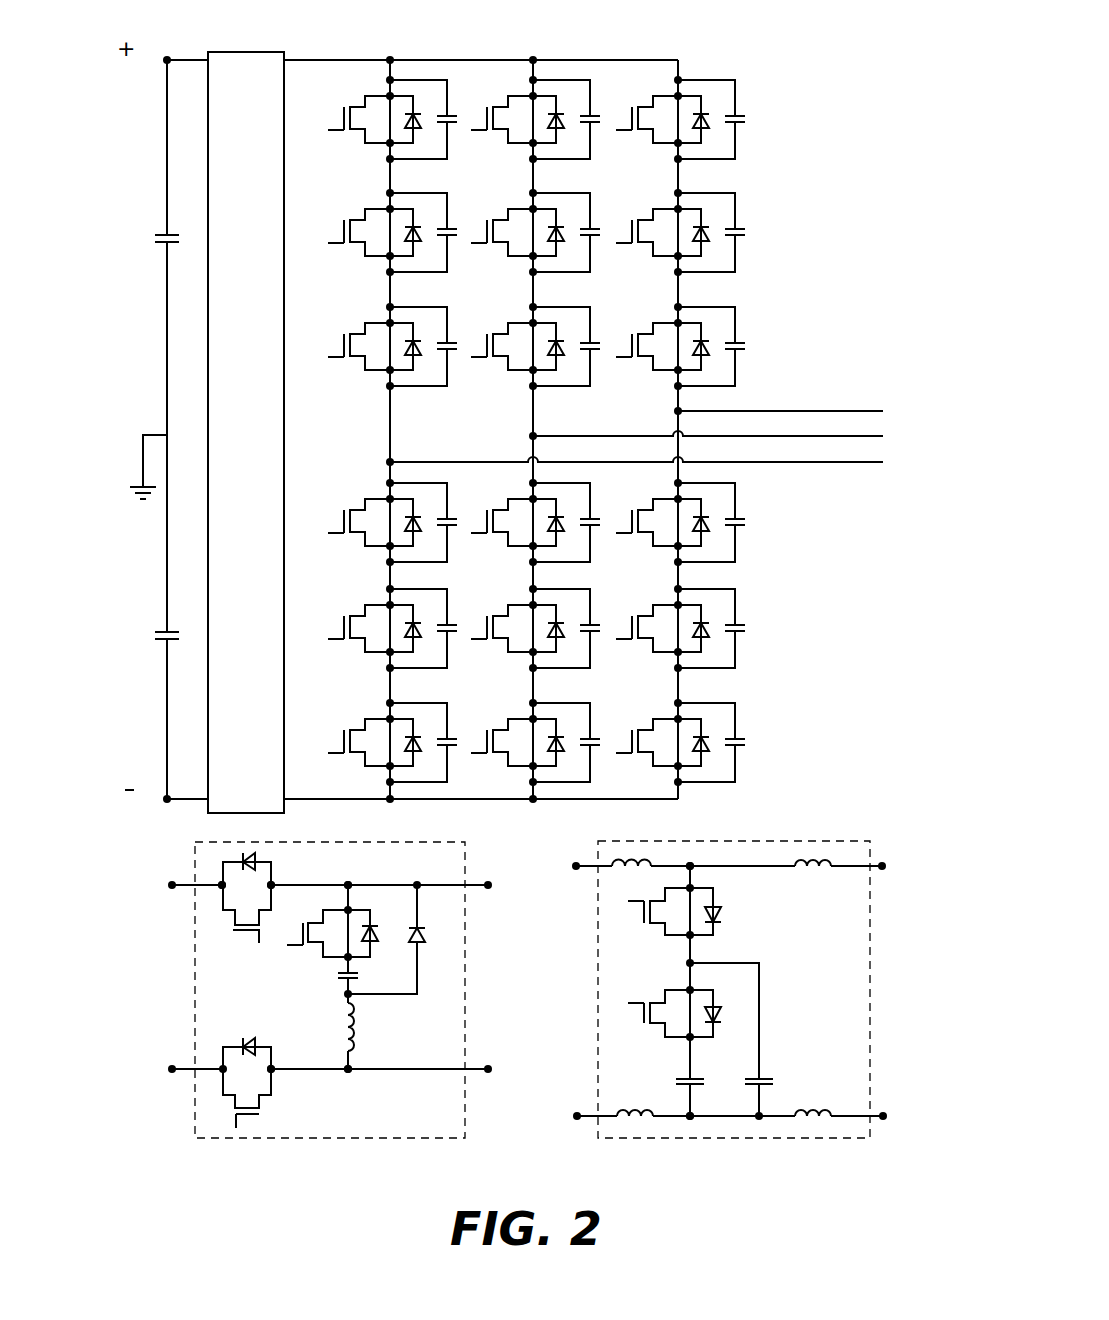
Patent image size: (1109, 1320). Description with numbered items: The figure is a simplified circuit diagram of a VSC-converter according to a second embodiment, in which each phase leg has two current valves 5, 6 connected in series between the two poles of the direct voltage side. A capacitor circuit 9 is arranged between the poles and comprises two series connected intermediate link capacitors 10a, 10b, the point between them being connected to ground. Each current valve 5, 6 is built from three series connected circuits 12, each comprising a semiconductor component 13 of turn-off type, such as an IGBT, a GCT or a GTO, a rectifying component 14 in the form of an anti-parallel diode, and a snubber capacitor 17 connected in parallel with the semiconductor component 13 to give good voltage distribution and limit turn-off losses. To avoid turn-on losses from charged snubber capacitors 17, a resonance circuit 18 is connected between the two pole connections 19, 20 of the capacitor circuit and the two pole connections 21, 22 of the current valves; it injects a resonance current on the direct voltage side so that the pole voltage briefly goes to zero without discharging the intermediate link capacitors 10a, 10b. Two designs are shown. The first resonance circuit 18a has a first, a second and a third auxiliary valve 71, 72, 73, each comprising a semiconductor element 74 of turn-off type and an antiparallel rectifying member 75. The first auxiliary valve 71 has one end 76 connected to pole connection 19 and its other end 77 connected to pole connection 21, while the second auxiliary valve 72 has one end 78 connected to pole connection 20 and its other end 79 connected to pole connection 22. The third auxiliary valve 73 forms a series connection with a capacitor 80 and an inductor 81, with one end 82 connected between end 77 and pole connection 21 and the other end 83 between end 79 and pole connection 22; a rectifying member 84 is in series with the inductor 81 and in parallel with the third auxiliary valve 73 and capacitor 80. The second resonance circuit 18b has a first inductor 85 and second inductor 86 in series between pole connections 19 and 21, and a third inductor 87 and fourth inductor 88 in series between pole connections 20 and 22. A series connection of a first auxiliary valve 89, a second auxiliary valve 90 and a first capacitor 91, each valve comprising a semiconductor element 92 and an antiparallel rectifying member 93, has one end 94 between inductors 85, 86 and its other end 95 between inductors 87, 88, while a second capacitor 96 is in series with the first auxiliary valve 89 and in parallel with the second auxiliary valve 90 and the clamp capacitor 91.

The current valve 5 is at (588, 207).
The current valve 6 is at (780, 603).
The capacitor circuit 9 is at (137, 429).
The intermediate link capacitor 10a is at (165, 245).
The intermediate link capacitor 10b is at (165, 640).
The series connected circuit 12 is at (701, 100).
The semiconductor component of turn-off type 13 is at (640, 110).
The rectifying component 14 is at (710, 135).
The snubber capacitor 17 is at (740, 117).
The resonance circuit 18 is at (280, 56).
The resonance circuit 18a is at (473, 842).
The resonance circuit 18b is at (880, 842).
The pole connection of the capacitor circuit 19 is at (167, 60).
The pole connection of the capacitor circuit 20 is at (167, 799).
The pole connection of the current valves 21 is at (390, 60).
The pole connection of the current valves 22 is at (390, 799).
The first auxiliary valve 71 is at (190, 897).
The second auxiliary valve 72 is at (192, 1073).
The third auxiliary valve 73 is at (315, 963).
The semiconductor element of turn-off type 74 is at (237, 952).
The rectifying member 75 is at (243, 857).
The end of the first auxiliary valve 76 is at (222, 885).
The end of the first auxiliary valve 77 is at (280, 885).
The end of the second auxiliary valve 78 is at (222, 1066).
The end of the second auxiliary valve 79 is at (275, 1069).
The capacitor 80 is at (358, 978).
The inductor 81 is at (352, 1024).
The end of the series connection 82 is at (348, 885).
The end of the series connection 83 is at (350, 1069).
The rectifying member 84 is at (425, 935).
The first inductor 85 is at (622, 866).
The second inductor 86 is at (800, 866).
The third inductor 87 is at (633, 1118).
The fourth inductor 88 is at (815, 1118).
The first auxiliary valve 89 is at (669, 925).
The second auxiliary valve 90 is at (658, 1032).
The first capacitor 91 is at (700, 1079).
The semiconductor element of turn-off type 92 is at (628, 901).
The rectifying member 93 is at (720, 910).
The end of the series connection 94 is at (690, 866).
The end of the series connection 95 is at (692, 1118).
The second capacitor 96 is at (768, 1079).